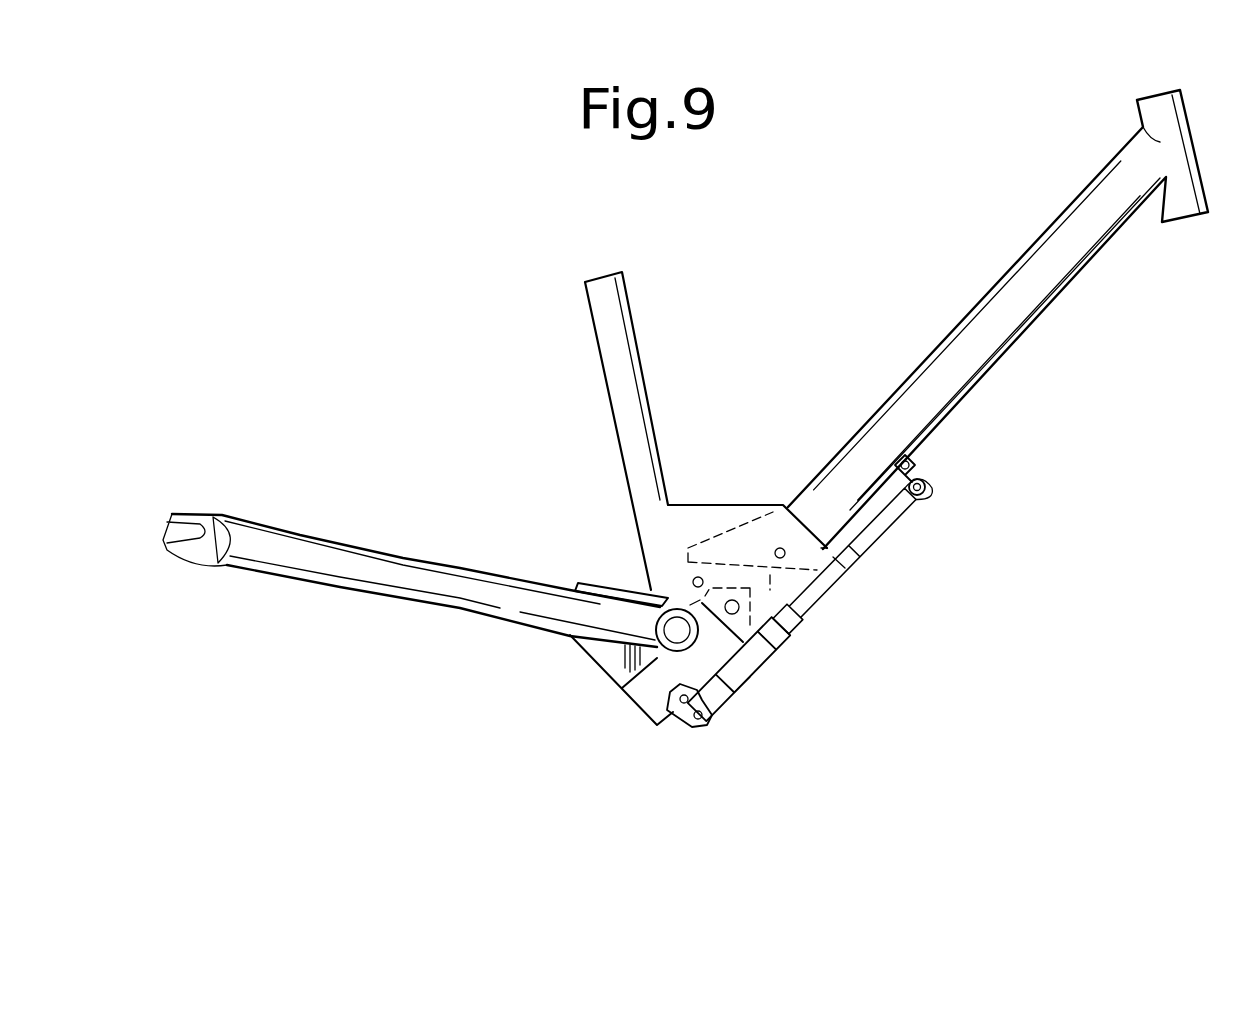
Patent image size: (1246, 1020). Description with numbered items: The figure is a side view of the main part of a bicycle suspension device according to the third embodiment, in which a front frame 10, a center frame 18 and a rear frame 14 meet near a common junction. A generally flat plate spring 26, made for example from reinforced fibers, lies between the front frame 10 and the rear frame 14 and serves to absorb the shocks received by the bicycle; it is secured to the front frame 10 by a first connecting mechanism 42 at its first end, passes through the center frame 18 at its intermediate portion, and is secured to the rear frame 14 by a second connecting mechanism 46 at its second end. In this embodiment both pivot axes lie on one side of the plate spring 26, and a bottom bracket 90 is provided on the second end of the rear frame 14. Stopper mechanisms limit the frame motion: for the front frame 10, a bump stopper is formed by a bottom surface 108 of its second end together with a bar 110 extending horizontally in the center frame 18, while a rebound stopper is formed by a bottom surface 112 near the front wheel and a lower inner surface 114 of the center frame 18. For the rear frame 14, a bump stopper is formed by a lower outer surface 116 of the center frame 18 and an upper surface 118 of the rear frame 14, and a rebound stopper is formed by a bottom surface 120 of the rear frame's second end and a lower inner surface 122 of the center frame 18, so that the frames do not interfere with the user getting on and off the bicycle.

The front frame 10 is at (1033, 292).
The center frame 18 is at (617, 343).
The rear frame 14 is at (302, 567).
The plate spring 26 is at (883, 527).
The first connecting mechanism 42 is at (945, 482).
The second connecting mechanism 46 is at (696, 735).
The bottom bracket 90 is at (660, 690).
The bottom surface of the second end of the front frame 108 is at (813, 622).
The bar 110 is at (690, 577).
The bottom surface of the second end of the front frame near the front wheel 112 is at (817, 570).
The lower inner surface of the center frame 114 is at (838, 565).
The lower outer surface of the center frame 116 is at (650, 590).
The upper surface of the rear frame 118 is at (622, 640).
The bottom surface of the second end of the rear frame 120 is at (767, 660).
The lower inner surface of the center frame 122 is at (788, 645).